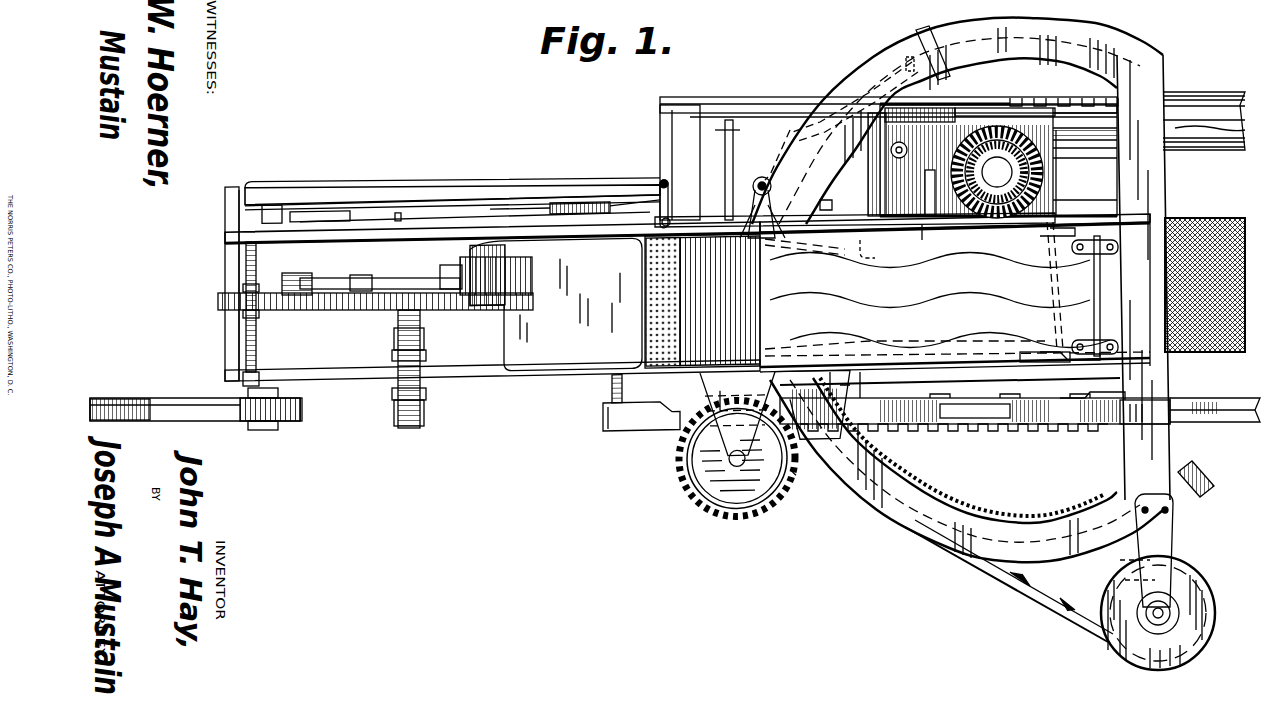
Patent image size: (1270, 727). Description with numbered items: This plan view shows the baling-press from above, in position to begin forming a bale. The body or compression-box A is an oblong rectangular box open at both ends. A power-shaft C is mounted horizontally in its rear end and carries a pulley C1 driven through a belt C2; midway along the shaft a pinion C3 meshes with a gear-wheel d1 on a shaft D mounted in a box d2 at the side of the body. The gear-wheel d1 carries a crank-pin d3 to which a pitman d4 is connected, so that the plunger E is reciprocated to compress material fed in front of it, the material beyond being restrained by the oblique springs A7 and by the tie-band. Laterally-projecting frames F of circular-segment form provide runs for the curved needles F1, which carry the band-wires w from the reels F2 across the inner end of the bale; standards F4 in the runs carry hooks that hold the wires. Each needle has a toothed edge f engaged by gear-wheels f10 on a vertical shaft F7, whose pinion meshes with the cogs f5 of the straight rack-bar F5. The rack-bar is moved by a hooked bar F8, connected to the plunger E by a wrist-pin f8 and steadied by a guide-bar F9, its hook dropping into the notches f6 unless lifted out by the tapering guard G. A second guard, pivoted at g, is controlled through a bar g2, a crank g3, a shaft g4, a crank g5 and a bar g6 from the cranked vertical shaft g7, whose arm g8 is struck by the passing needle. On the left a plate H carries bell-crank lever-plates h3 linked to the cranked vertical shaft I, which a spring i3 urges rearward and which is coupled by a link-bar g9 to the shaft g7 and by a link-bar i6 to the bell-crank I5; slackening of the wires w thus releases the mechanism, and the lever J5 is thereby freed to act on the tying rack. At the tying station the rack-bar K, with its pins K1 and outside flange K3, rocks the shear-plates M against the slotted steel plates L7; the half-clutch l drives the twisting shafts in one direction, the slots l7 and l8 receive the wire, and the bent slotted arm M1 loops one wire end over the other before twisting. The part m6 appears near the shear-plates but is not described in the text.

The compression-box A is at (235, 265).
The springs A7 is at (840, 250).
The power-shaft C is at (252, 337).
The pulley C1 is at (215, 402).
The belt C2 is at (128, 408).
The pinion C3 is at (220, 303).
The shaft D is at (410, 428).
The gear-wheel d1 is at (340, 312).
The box d2 is at (426, 357).
The crank-pin d3 is at (300, 276).
The pitman d4 is at (362, 278).
The plunger E is at (556, 304).
The laterally-projecting frames F is at (990, 32).
The needles F1 is at (1195, 505).
The reels F2 is at (1205, 600).
The standards F4 is at (928, 45).
The rack-bar F5 is at (1222, 422).
The shaft F7 is at (737, 455).
The hooked bar F8 is at (653, 410).
The guide-bar F9 is at (935, 380).
The toothed edge f is at (1213, 486).
The cogs f5 is at (950, 428).
The notches f6 is at (1112, 424).
The wrist-pin f8 is at (612, 390).
The gear-wheels f10 is at (798, 495).
The guard G is at (1008, 426).
The pivot g is at (1092, 393).
The bar g2 is at (1110, 342).
The crank g3 is at (1058, 355).
The shaft g4 is at (1100, 290).
The crank g5 is at (1110, 242).
The bar g6 is at (922, 233).
The vertical shaft g7 is at (764, 240).
The arm g8 is at (833, 198).
The link-bar g9 is at (855, 224).
The vertical wall or plate H is at (672, 108).
The lever-plates h3 is at (736, 132).
The vertical shaft I is at (660, 186).
The bell-crank I5 is at (312, 214).
The spring i3 is at (568, 200).
The link-bar i6 is at (400, 212).
The lever J5 is at (470, 192).
The rack-bar K is at (775, 105).
The pins or teeth K1 is at (1040, 104).
The outside flange K3 is at (1182, 96).
The steel plates L7 is at (947, 106).
The half-clutch l is at (997, 172).
The horizontal slots l7 is at (1058, 175).
The vertical slots l8 is at (926, 192).
The shear-plates M is at (978, 108).
The arm M1 is at (863, 164).
The pin m6 is at (905, 146).
The band-wires w is at (1000, 582).